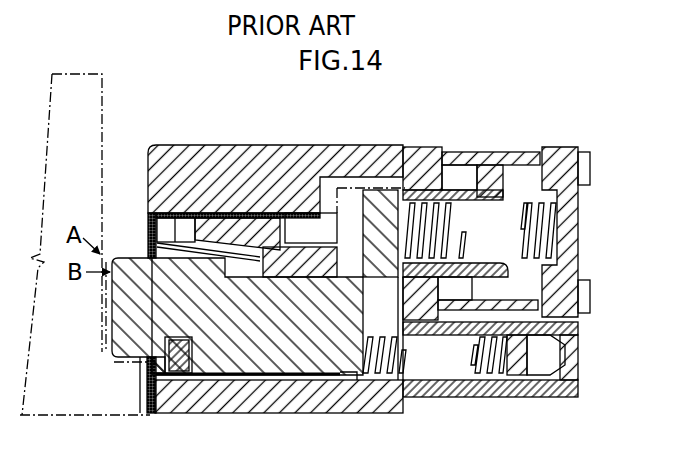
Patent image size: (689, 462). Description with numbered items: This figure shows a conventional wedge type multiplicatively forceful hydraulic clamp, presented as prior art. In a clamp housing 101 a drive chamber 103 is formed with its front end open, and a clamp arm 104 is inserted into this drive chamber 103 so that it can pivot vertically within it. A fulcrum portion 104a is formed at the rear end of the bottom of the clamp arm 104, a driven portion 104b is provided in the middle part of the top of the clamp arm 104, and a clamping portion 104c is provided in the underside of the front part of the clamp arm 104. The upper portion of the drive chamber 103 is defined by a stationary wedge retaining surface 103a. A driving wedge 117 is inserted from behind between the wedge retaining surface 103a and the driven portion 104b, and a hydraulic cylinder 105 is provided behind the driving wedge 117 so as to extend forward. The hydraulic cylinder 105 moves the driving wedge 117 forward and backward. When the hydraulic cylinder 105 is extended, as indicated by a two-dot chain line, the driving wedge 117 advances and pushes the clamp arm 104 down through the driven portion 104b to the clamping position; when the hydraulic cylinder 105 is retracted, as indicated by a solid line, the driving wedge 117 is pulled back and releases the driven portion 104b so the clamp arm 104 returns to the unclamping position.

The clamp housing 101 is at (254, 142).
The drive chamber 103 is at (247, 262).
The wedge retaining surface 103a is at (176, 240).
The clamp arm 104 is at (147, 340).
The fulcrum portion 104a is at (347, 376).
The driven portion 104b is at (178, 238).
The clamping portion 104c is at (120, 362).
The hydraulic cylinder 105 is at (510, 182).
The driving wedge 117 is at (230, 213).